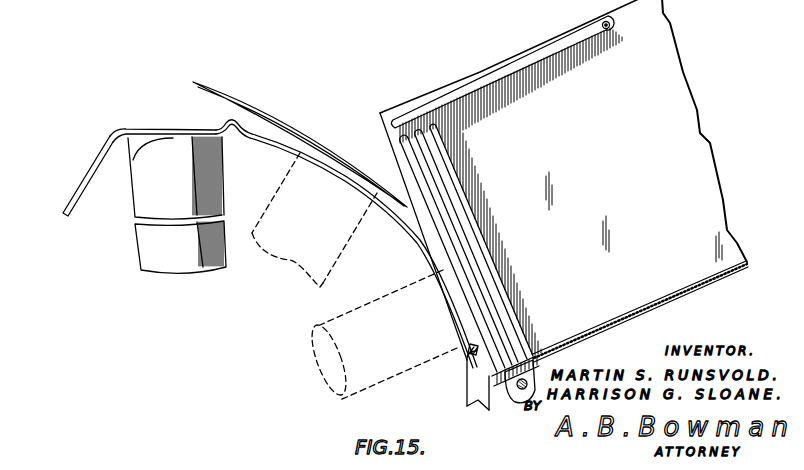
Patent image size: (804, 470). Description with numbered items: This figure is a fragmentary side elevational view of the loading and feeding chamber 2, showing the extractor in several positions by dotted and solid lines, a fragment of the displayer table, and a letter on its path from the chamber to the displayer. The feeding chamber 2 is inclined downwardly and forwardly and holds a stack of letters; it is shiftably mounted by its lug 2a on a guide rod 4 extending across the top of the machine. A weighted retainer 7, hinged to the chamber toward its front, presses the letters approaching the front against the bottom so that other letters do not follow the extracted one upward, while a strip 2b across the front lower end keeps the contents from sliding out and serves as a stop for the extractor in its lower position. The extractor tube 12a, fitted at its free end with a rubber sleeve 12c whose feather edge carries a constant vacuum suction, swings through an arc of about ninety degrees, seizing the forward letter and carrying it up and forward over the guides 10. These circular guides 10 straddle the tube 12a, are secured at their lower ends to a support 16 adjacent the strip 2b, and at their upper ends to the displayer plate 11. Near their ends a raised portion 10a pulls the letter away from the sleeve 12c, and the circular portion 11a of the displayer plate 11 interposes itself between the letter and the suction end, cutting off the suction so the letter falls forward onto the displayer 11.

The feeding chamber 2 is at (564, 193).
The lug 2a is at (490, 392).
The strip 2b is at (468, 352).
The guide rod 4 is at (512, 395).
The weighted retainer 7 is at (522, 65).
The guide wires 10 is at (277, 138).
The raised portion 10a is at (240, 124).
The displayer plate 11 is at (100, 155).
The circular portion of displayer plate 11a is at (160, 129).
The extractor tube 12a is at (150, 255).
The rubber sleeve 12c is at (143, 180).
The support 16 is at (468, 376).